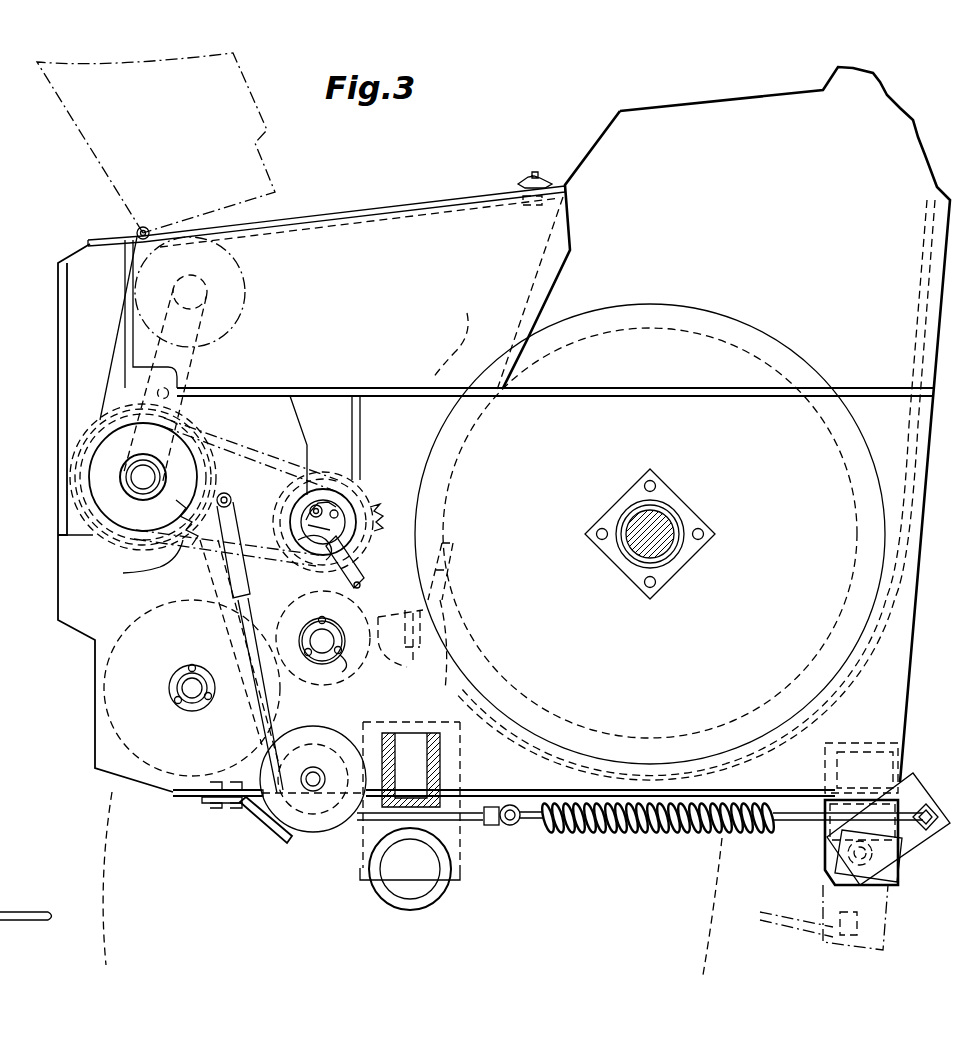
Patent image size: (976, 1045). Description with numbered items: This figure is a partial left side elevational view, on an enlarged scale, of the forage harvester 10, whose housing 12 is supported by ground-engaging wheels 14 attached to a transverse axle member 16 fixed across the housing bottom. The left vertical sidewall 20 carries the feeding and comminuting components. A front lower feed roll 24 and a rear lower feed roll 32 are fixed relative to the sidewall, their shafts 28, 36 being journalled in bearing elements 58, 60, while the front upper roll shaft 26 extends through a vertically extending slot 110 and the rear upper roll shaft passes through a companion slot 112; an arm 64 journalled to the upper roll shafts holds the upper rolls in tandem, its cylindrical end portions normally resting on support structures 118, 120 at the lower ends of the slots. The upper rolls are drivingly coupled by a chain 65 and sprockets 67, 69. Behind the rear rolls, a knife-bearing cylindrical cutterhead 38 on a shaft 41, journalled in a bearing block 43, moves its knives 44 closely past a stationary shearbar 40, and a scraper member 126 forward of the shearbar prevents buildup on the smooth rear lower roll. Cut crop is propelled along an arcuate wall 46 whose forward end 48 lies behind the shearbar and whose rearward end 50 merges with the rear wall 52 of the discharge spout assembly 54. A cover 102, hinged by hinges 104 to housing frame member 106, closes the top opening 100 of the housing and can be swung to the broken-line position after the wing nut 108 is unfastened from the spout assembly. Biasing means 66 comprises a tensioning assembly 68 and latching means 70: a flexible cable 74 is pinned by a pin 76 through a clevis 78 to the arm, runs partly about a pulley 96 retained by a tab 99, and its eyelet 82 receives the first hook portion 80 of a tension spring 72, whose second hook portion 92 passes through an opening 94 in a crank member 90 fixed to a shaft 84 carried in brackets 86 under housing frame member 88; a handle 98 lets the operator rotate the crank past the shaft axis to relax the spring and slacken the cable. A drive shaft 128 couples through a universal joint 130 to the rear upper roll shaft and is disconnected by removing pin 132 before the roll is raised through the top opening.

The forage harvester 10 is at (450, 140).
The housing 12 is at (916, 585).
The ground-engaging wheels 14 is at (104, 828).
The axle member 16 is at (451, 870).
The vertical sidewall 20 is at (414, 427).
The front lower feed roll 24 is at (105, 703).
The front upper feed roll shaft 26 is at (130, 478).
The front lower feed roll shaft 28 is at (196, 696).
The rear lower feed roll 32 is at (348, 690).
The rear lower feed roll shaft 36 is at (330, 663).
The cutterhead 38 is at (663, 330).
The shearbar 40 is at (423, 620).
The cutterhead shaft 41 is at (662, 520).
The bearing block 43 is at (682, 572).
The knives 44 is at (447, 560).
The arcuate wall 46 is at (552, 778).
The forward end of arcuate wall 48 is at (458, 690).
The rearward end of arcuate wall 50 is at (912, 440).
The rear wall of discharge spout assembly 52 is at (930, 246).
The discharge spout assembly 54 is at (912, 122).
The bearing element 58 is at (205, 665).
The bearing element 60 is at (350, 670).
The arm 64 is at (282, 480).
The chain 65 is at (276, 444).
The biasing means 66 is at (693, 855).
The sprocket 67 is at (150, 572).
The tensioning assembly 68 is at (565, 835).
The sprocket 69 is at (384, 516).
The latching means 70 is at (901, 896).
The tension spring 72 is at (599, 834).
The flexible cable 74 is at (325, 833).
The pin 76 is at (231, 505).
The clevis 78 is at (236, 549).
The first hook portion 80 is at (512, 826).
The eyelet 82 is at (495, 806).
The shaft 84 is at (848, 857).
The brackets 86 is at (900, 872).
The housing frame member 88 is at (882, 758).
The crank member 90 is at (930, 800).
The second hook portion 92 is at (914, 773).
The opening 94 is at (929, 830).
The pulley 96 is at (305, 833).
The handle 98 is at (6, 910).
The tab 99 is at (268, 835).
The top opening 100 is at (430, 386).
The cover 102 is at (266, 128).
The hinges 104 is at (149, 228).
The housing frame member 106 is at (114, 240).
The wing nut 108 is at (540, 176).
The slot 110 is at (178, 412).
The slot 112 is at (350, 455).
The support structure 118 is at (100, 540).
The support structure 120 is at (356, 560).
The scraper member 126 is at (414, 662).
The drive shaft 128 is at (364, 586).
The universal joint 130 is at (331, 503).
The pin 132 is at (322, 565).